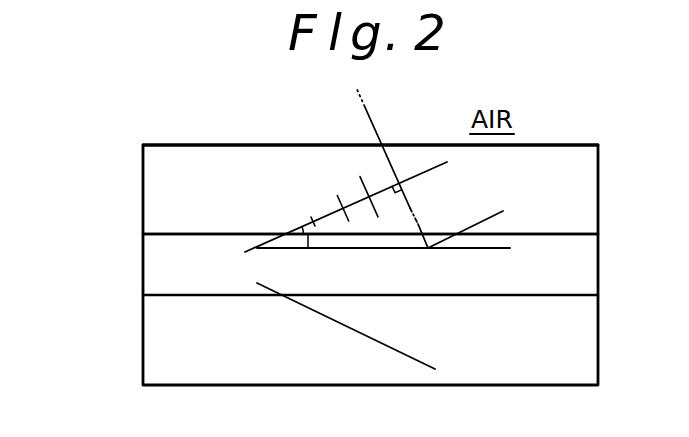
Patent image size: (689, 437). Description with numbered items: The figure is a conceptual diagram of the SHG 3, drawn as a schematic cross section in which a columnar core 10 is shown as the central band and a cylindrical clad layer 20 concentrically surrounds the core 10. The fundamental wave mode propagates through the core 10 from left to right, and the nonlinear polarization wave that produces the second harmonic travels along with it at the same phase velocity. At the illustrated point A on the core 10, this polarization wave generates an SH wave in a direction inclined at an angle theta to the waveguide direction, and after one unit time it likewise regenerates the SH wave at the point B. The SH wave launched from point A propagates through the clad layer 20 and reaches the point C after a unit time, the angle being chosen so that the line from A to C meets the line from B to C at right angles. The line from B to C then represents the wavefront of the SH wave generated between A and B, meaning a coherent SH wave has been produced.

The SHG 3 is at (247, 124).
The clad layer 20 is at (143, 172).
The core 10 is at (143, 262).
The point A is at (248, 253).
The point B is at (438, 256).
The point C is at (384, 176).